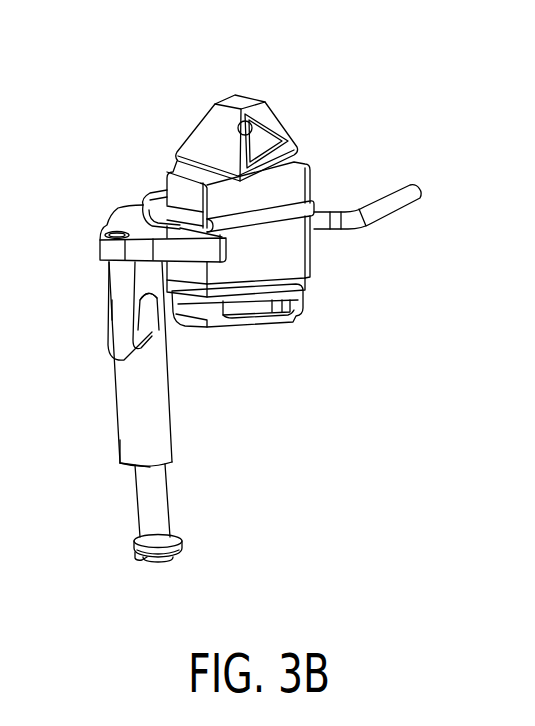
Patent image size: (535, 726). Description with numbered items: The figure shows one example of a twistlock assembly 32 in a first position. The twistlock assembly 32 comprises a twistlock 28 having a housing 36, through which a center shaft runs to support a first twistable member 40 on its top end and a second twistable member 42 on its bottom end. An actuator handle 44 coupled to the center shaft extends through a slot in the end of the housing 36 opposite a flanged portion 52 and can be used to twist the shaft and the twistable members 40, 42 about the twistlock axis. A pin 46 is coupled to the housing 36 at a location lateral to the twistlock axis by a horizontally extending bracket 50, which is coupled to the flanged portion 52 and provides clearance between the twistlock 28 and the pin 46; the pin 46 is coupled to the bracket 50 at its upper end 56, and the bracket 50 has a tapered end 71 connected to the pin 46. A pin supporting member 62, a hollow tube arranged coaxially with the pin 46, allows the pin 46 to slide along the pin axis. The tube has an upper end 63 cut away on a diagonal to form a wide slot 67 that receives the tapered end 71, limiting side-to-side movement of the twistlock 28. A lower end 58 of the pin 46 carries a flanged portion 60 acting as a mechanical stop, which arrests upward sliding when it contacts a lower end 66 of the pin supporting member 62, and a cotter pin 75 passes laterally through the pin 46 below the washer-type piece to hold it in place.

The twistlock 28 is at (150, 158).
The twistlock assembly 32 is at (338, 53).
The housing 36 is at (312, 263).
The first twistable member 40 is at (250, 97).
The second twistable member 42 is at (289, 317).
The actuator handle 44 is at (388, 190).
The pin 46 is at (115, 306).
The bracket 50 is at (124, 210).
The flanged portion 52 is at (156, 199).
The upper end 56 is at (91, 264).
The lower end 58 is at (175, 521).
The flanged portion 60 is at (192, 538).
The pin supporting member 62 is at (166, 378).
The upper end 63 is at (159, 304).
The lower end 66 is at (126, 460).
The slot 67 is at (110, 340).
The tapered end 71 is at (102, 243).
The cotter pin 75 is at (140, 560).